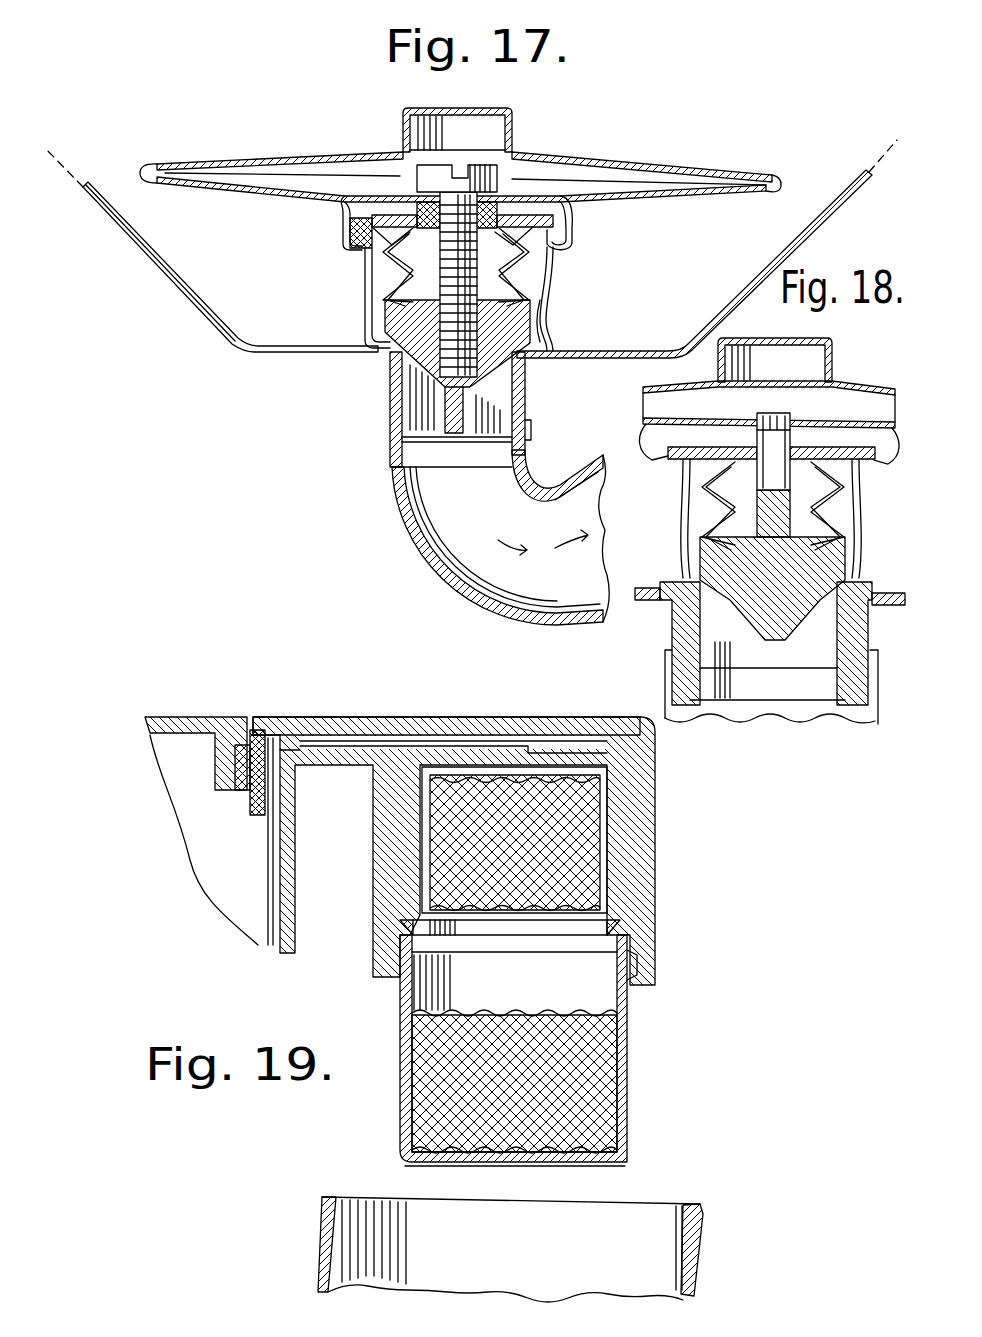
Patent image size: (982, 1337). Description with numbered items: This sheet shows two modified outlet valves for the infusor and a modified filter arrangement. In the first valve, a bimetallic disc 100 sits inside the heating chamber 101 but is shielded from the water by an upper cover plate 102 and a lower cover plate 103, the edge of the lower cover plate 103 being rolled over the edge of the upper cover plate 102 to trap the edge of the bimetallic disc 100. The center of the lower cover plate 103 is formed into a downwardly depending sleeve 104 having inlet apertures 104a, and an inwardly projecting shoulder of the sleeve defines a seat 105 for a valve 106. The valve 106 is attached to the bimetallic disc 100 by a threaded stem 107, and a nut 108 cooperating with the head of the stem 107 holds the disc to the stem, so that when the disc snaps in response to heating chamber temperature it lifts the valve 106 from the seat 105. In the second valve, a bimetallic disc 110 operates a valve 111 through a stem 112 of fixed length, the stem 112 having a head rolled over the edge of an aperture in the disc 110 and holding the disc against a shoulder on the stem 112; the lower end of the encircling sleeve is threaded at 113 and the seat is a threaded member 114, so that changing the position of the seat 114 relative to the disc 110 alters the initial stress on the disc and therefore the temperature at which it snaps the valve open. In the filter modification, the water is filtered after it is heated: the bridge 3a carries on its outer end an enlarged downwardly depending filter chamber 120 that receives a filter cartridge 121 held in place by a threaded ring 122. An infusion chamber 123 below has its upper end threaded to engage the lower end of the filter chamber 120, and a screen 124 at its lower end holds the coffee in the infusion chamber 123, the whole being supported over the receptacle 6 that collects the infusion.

In FIG. 17, the bimetallic disc 100 is at (540, 192).
In FIG. 17, the heating chamber 101 is at (178, 292).
In FIG. 17, the upper cover plate 102 is at (652, 168).
In FIG. 17, the lower cover plate 103 is at (677, 201).
In FIG. 17, the sleeve 104 is at (550, 269).
In FIG. 17, the inlet apertures 104a is at (543, 311).
In FIG. 17, the seat 105 is at (533, 338).
In FIG. 17, the valve 106 is at (400, 358).
In FIG. 17, the threaded stem 107 is at (447, 263).
In FIG. 17, the nut 108 is at (397, 238).
In FIG. 18, the bimetallic disc 110 is at (853, 417).
In FIG. 18, the valve 111 is at (717, 557).
In FIG. 18, the stem 112 is at (767, 465).
In FIG. 18, the threaded lower end of sleeve 113 is at (680, 623).
In FIG. 18, the threaded seat member 114 is at (702, 675).
In FIG. 19, the projecting bridge 3a is at (372, 717).
In FIG. 19, the filter chamber 120 is at (640, 875).
In FIG. 19, the filter cartridge 121 is at (598, 834).
In FIG. 19, the threaded ring 122 is at (612, 926).
In FIG. 19, the infusion chamber 123 is at (630, 1018).
In FIG. 19, the screen 124 is at (582, 1160).
In FIG. 19, the receptacle 6 is at (703, 1237).